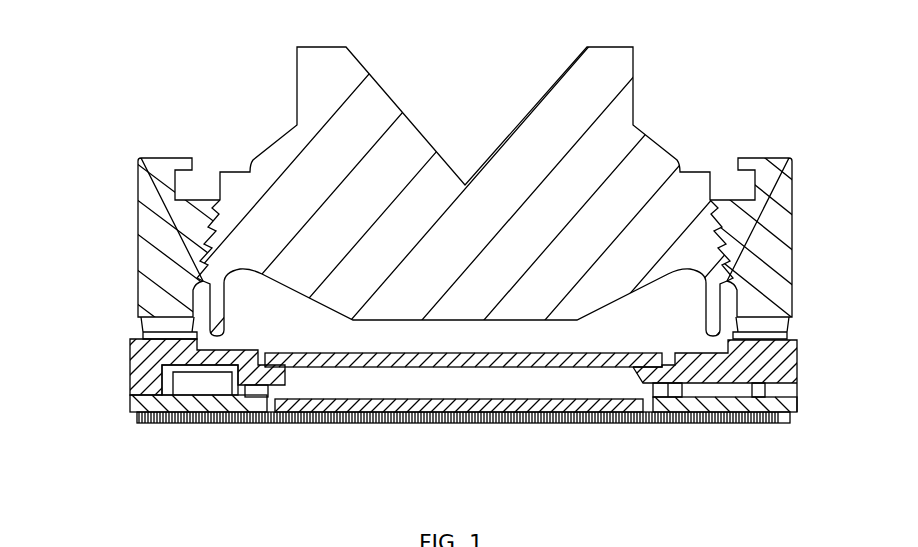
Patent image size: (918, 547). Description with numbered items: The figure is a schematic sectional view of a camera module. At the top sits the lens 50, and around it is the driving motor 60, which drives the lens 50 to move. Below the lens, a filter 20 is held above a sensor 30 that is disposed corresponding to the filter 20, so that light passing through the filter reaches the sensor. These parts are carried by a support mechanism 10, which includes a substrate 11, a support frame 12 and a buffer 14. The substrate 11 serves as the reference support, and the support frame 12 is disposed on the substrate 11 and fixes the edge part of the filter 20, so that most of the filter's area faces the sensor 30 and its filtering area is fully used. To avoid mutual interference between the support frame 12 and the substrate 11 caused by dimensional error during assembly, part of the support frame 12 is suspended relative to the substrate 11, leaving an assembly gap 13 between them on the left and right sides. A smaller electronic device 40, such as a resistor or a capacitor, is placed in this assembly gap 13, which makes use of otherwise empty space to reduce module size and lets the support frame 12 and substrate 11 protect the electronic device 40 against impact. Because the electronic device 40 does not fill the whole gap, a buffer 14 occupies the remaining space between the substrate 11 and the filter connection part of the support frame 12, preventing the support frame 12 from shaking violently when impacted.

The support mechanism 10 is at (453, 401).
The substrate 11 is at (138, 400).
The support frame 12 is at (140, 368).
The assembly gap 13 is at (153, 423).
The buffer 14 is at (247, 398).
The filter 20 is at (400, 364).
The sensor 30 is at (473, 403).
The electronic device 40 is at (212, 384).
The lens 50 is at (302, 140).
The driving motor 60 is at (153, 223).